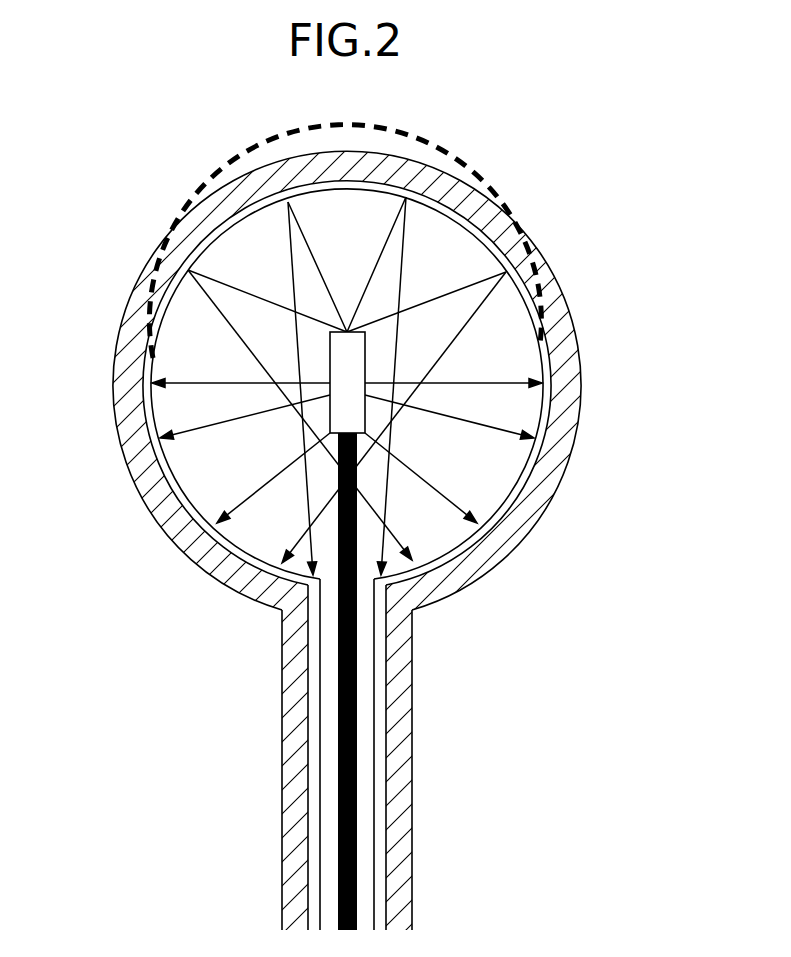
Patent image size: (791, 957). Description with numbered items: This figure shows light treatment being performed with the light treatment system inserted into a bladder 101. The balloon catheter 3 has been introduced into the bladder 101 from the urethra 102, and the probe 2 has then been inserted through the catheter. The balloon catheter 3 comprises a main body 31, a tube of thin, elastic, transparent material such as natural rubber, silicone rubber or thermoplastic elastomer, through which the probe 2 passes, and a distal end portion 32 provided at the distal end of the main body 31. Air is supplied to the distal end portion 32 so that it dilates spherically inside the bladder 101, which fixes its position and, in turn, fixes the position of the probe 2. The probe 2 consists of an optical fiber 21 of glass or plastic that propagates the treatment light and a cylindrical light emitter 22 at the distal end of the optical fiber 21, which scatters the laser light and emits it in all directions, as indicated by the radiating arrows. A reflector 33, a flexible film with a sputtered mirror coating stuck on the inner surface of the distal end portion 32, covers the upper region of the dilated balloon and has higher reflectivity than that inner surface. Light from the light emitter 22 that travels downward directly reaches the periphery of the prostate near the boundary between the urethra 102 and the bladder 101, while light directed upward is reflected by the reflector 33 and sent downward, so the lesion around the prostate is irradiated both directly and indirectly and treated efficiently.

The probe 2 is at (371, 695).
The balloon catheter 3 is at (147, 345).
The optical fiber 21 is at (358, 660).
The light emitter 22 is at (330, 392).
The main body 31 is at (320, 703).
The distal end portion 32 is at (163, 463).
The reflector 33 is at (353, 197).
The bladder 101 is at (568, 350).
The urethra 102 is at (400, 738).